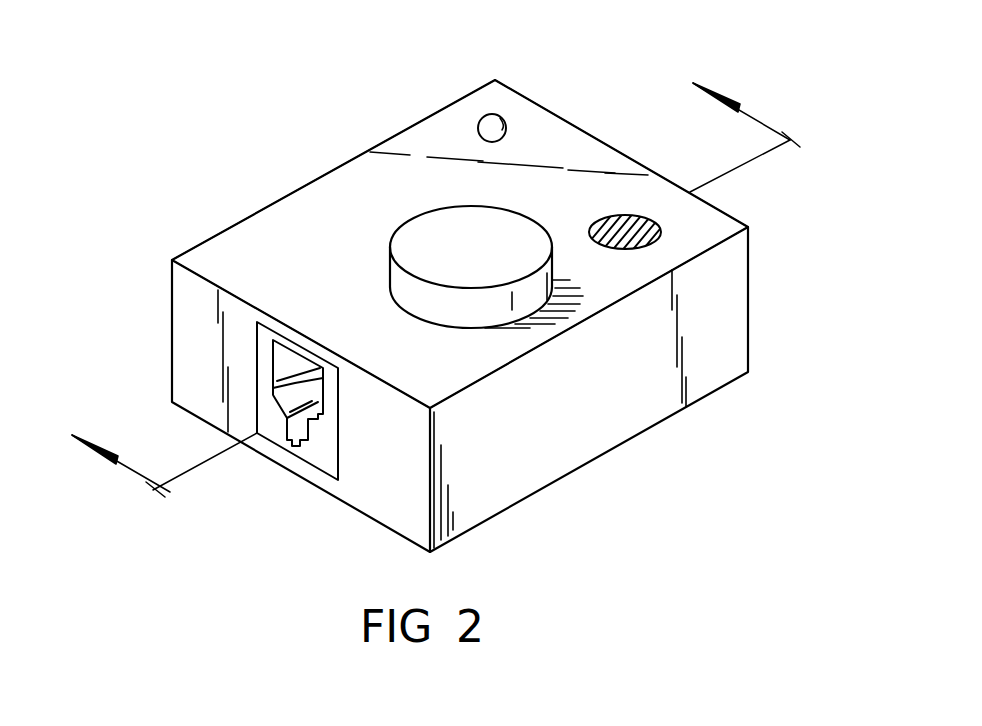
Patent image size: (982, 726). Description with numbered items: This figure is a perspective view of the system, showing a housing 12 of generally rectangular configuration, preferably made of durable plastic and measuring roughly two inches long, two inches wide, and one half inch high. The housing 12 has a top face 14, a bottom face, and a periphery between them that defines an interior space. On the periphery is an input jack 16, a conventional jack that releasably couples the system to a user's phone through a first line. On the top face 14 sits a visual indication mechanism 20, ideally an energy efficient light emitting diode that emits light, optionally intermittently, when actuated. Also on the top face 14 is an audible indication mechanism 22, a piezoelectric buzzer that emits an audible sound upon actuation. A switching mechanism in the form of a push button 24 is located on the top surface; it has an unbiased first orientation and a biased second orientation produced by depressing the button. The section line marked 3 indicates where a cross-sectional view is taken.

The housing 12 is at (750, 237).
The top face 14 is at (265, 230).
The input jack 16 is at (293, 440).
The visual indication mechanism 20 is at (500, 122).
The audible indication mechanism 22 is at (630, 214).
The push button 24 is at (432, 218).
The section line 3- 3 is at (447, 311).